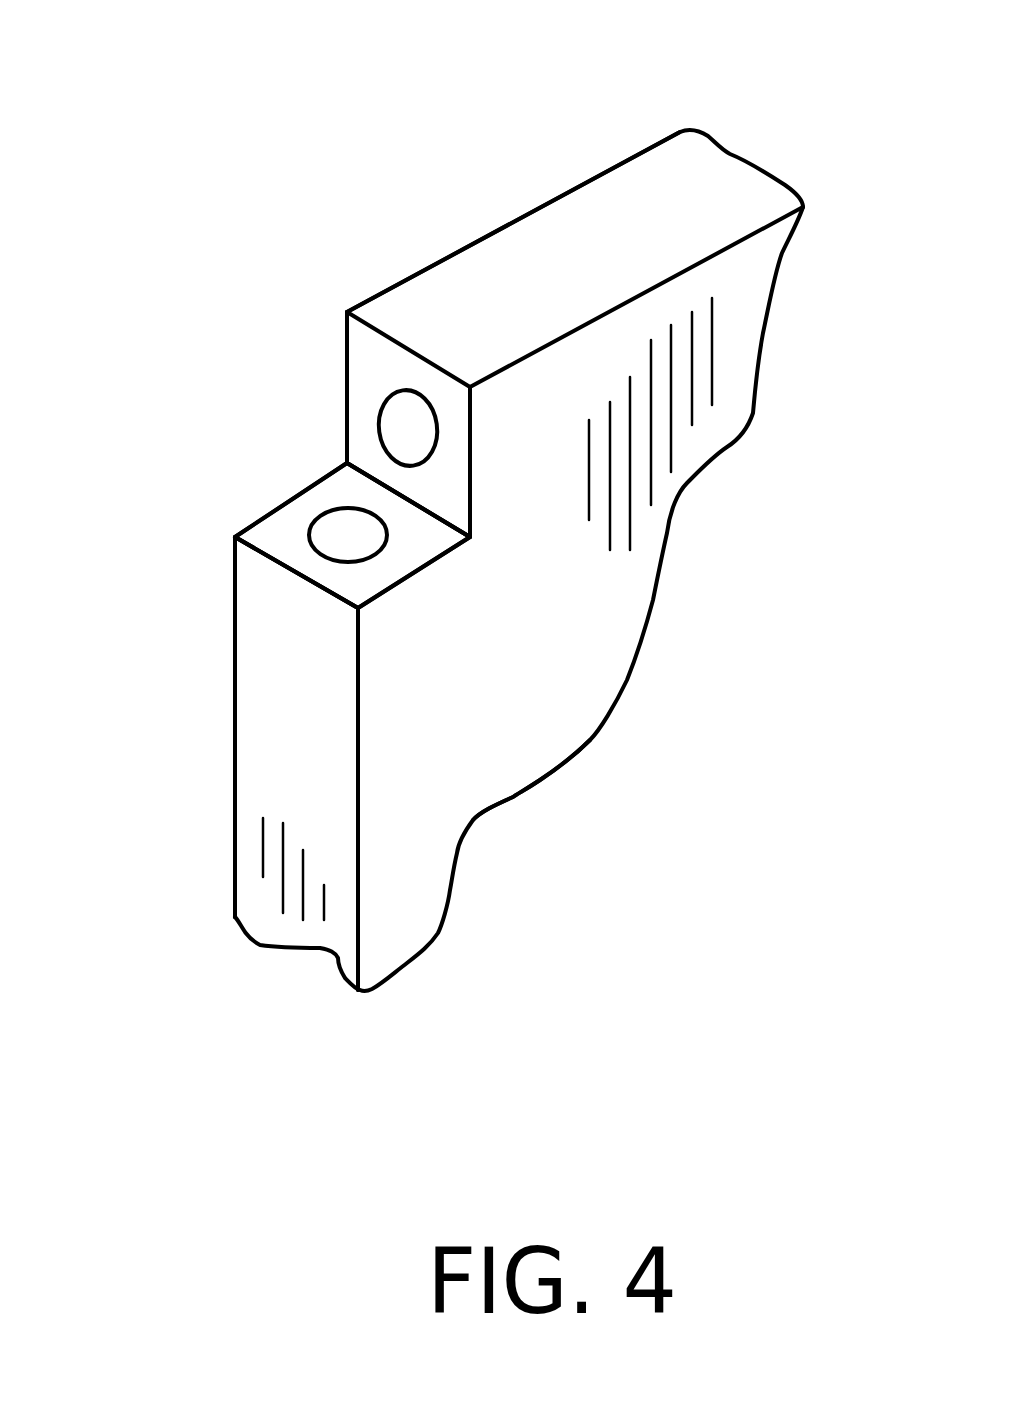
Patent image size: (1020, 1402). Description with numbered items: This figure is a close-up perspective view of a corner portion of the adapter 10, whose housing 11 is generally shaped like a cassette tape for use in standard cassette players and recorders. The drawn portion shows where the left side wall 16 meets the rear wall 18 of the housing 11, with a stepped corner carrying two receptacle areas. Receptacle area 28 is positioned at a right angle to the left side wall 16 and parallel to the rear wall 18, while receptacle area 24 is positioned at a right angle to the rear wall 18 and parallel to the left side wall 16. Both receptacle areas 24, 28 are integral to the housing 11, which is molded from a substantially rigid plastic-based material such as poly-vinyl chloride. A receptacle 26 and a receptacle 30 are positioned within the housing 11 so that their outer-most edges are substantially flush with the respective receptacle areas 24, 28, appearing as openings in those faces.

The adapter 10 is at (785, 512).
The housing 11 is at (490, 697).
The left side wall 16 is at (268, 782).
The rear wall 18 is at (567, 230).
The receptacle area 24 is at (367, 358).
The receptacle 26 is at (408, 428).
The receptacle area 28 is at (270, 535).
The receptacle 30 is at (350, 530).